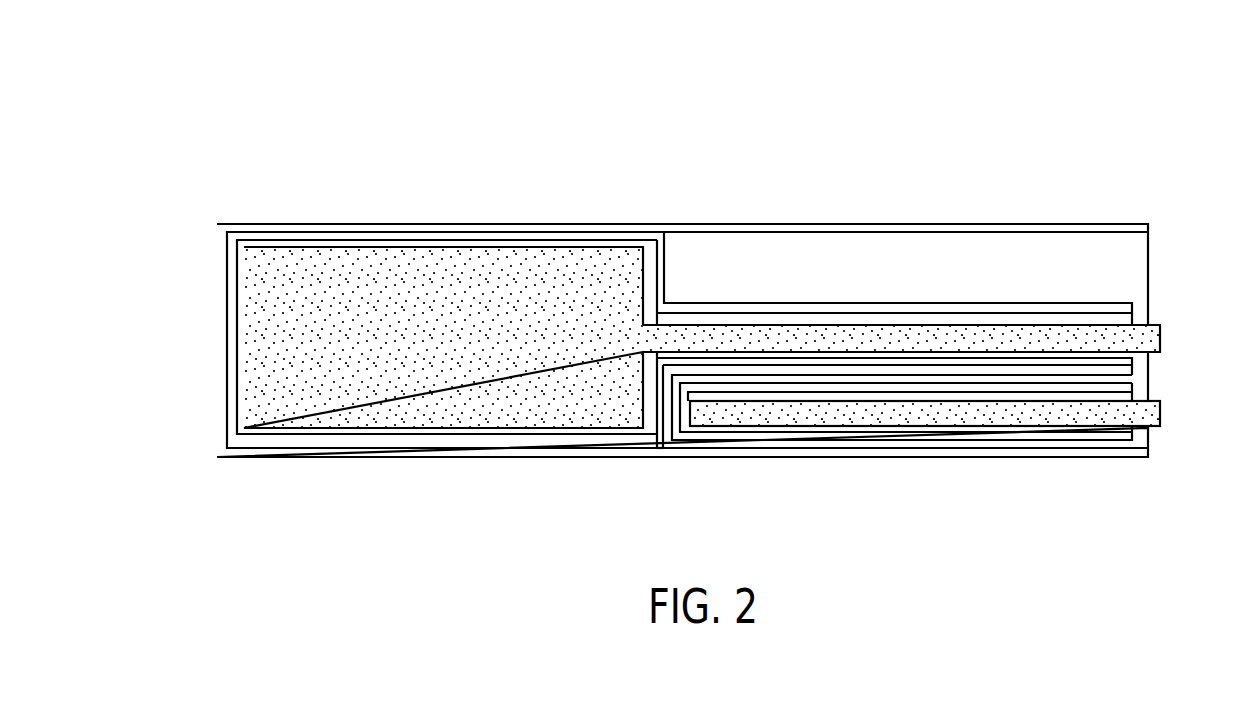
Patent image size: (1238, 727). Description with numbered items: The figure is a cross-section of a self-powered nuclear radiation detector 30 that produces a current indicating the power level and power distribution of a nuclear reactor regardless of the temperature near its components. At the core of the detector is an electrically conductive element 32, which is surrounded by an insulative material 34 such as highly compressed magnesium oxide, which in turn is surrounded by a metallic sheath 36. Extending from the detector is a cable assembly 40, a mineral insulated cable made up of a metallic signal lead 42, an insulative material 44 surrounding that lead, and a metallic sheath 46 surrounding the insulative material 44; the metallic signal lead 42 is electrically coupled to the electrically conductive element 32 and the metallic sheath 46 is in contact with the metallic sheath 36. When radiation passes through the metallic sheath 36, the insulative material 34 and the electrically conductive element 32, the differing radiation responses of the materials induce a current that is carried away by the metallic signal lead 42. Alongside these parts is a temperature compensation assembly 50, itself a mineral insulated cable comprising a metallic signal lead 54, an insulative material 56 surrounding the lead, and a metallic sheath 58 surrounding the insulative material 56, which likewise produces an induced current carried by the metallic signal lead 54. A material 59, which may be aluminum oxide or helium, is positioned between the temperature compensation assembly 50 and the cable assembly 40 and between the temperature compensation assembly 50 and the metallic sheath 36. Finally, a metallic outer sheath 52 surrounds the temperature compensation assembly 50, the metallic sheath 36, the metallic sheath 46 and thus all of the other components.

The self-powered nuclear radiation detector 30 is at (128, 120).
The electrically conductive element 32 is at (592, 250).
The insulative material 34 is at (550, 243).
The metallic sheath 36 is at (473, 238).
The cable assembly 40 is at (1047, 268).
The metallic signal lead 42 is at (852, 335).
The insulative material 44 is at (790, 313).
The metallic sheath 46 is at (752, 300).
The temperature compensation assembly 50 is at (732, 476).
The metallic outer sheath 52 is at (372, 224).
The metallic signal lead 54 is at (823, 422).
The insulative material 56 is at (933, 433).
The metallic sheath 58 is at (1023, 440).
The material 59 is at (667, 440).